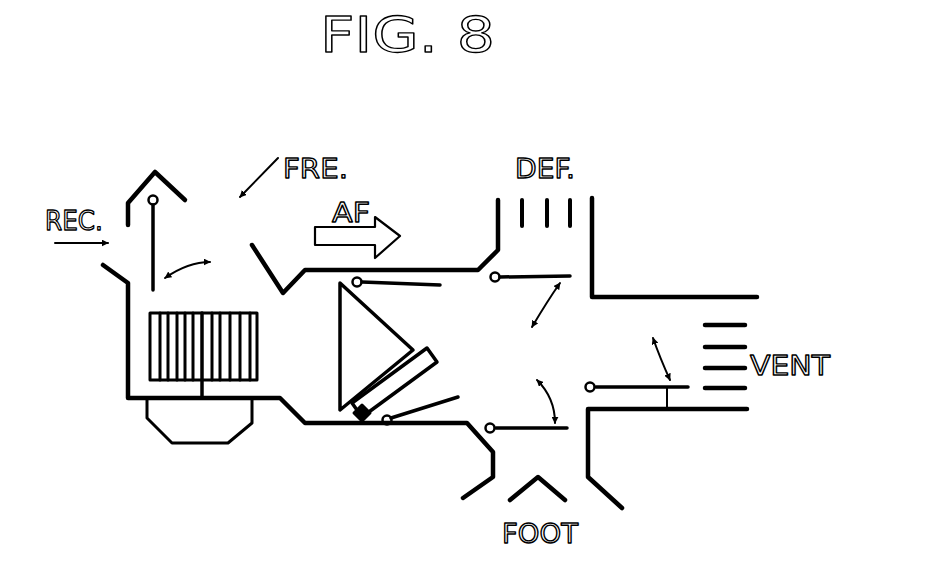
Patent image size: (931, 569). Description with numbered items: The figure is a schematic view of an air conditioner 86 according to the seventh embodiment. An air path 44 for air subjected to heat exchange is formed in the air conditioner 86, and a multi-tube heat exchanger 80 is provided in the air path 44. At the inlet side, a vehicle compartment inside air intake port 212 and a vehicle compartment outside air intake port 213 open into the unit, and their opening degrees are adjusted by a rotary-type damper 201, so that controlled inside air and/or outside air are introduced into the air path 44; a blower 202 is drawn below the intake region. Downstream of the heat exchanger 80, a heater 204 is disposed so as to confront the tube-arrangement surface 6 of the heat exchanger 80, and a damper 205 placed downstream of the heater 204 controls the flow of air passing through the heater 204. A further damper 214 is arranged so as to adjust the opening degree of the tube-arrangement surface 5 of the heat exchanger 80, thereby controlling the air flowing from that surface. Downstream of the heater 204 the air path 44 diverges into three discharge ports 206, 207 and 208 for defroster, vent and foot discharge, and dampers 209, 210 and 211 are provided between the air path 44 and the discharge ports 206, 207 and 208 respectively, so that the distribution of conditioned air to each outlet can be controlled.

The air conditioner 86 is at (392, 186).
The rotary-type damper 201 is at (155, 258).
The blower 202 is at (150, 355).
The vehicle compartment inside air intake port 212 is at (110, 255).
The vehicle compartment outside air intake port 213 is at (287, 225).
The damper 214 is at (422, 283).
The multi-tube heat exchanger 80 is at (343, 366).
The tube-arrangement surface 5 is at (408, 333).
The tube-arrangement surface 6 is at (370, 428).
The heater 204 is at (400, 397).
The damper 205 is at (442, 405).
The air path 44 is at (512, 350).
The discharge port 206 is at (567, 247).
The damper 209 is at (562, 270).
The damper 211 is at (522, 423).
The damper 210 is at (667, 395).
The discharge port 207 is at (697, 373).
The discharge port 208 is at (555, 457).